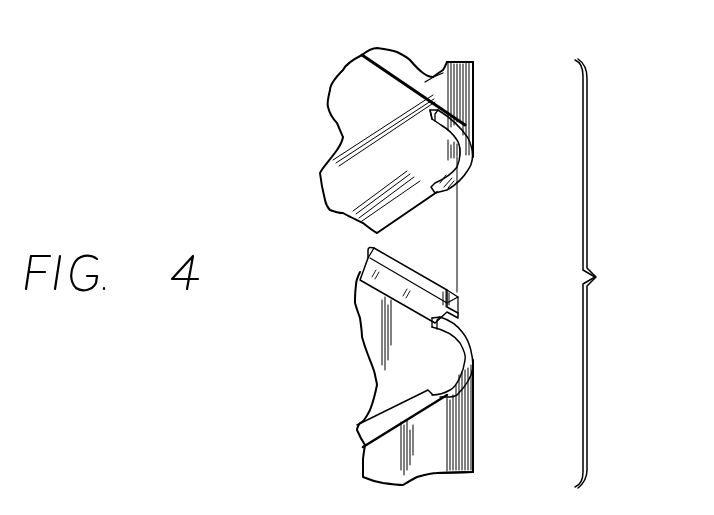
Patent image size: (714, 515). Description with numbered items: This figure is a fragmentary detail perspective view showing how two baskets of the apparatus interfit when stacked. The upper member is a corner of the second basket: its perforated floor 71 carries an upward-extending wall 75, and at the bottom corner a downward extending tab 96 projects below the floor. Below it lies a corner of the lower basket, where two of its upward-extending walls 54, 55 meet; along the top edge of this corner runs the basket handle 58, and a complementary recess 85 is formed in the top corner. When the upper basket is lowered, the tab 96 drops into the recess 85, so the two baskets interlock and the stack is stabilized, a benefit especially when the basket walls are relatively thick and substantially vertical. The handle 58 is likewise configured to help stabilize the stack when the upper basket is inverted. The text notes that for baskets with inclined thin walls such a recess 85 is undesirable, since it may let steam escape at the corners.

The perforated floor 71 is at (360, 113).
The upward-extending wall 75 is at (447, 62).
The downward extending tab 96 is at (473, 157).
The upward-extending wall 54 is at (363, 345).
The basket handle 58 is at (416, 285).
The complementary recess 85 is at (460, 373).
The upward-extending wall 55 is at (431, 441).